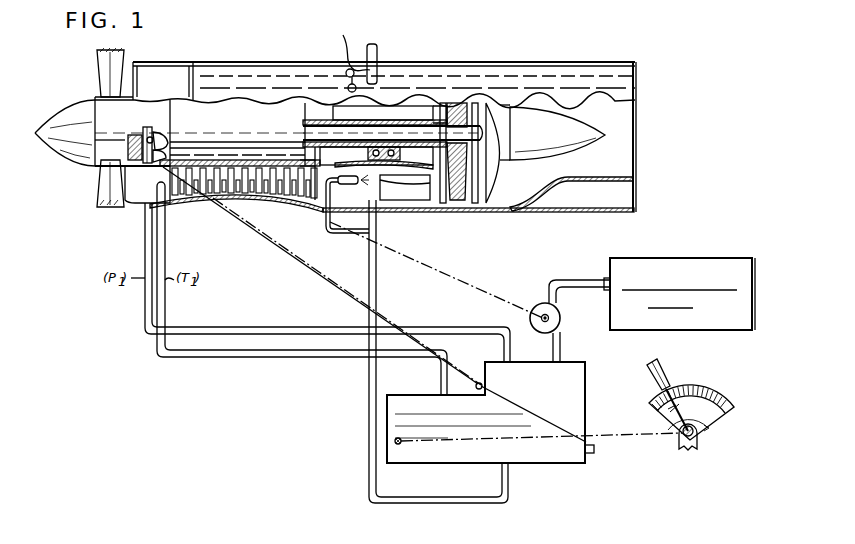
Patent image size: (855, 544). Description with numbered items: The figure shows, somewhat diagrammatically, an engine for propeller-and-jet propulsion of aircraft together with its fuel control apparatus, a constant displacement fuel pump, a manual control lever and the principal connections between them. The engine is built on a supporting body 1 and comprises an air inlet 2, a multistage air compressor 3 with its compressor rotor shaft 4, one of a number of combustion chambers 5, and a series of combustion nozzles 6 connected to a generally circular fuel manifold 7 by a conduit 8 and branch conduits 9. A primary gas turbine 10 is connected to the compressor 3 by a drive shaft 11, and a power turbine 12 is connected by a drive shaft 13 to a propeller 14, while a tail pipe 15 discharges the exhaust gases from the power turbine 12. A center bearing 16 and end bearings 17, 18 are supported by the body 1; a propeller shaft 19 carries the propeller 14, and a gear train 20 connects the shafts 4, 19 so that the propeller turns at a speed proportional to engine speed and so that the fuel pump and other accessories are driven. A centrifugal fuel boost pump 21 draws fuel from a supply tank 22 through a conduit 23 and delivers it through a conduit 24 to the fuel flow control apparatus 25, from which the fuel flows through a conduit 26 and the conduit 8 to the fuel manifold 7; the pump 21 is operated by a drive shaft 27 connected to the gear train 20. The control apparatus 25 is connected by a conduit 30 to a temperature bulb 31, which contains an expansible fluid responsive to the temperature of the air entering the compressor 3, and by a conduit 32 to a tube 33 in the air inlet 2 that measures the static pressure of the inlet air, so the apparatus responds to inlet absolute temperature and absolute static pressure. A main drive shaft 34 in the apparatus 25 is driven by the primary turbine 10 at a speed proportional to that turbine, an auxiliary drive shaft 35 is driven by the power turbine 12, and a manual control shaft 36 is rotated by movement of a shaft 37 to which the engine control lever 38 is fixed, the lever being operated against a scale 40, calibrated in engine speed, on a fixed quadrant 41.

The supporting body 1 is at (544, 60).
The air inlet 2 is at (145, 181).
The multistage air compressor 3 is at (186, 200).
The compressor rotor shaft 4 is at (253, 126).
The combustion chamber 5 is at (410, 198).
The combustion nozzles 6 is at (351, 183).
The fuel manifold 7 is at (377, 52).
The conduit 8 is at (380, 277).
The branch conduits 9 is at (347, 66).
The primary gas turbine 10 is at (447, 208).
The drive shaft 11 is at (318, 116).
The power turbine 12 is at (494, 180).
The drive shaft 13 is at (478, 134).
The propeller 14 is at (108, 72).
The tail pipe 15 is at (625, 157).
The center bearing 16 is at (385, 145).
The end bearing 17 is at (164, 140).
The end bearing 18 is at (518, 153).
The propeller shaft 19 is at (152, 134).
The gear train 20 is at (135, 146).
The centrifugal fuel boost pump 21 is at (562, 321).
The supply tank 22 is at (703, 268).
The conduit 23 is at (576, 282).
The conduit 24 is at (562, 349).
The fuel flow control apparatus 25 is at (558, 392).
The conduit 26 is at (509, 503).
The drive shaft 27 is at (542, 314).
The conduit 30 is at (302, 357).
The temperature bulb 31 is at (152, 208).
The conduit 32 is at (272, 327).
The tube 33 is at (140, 201).
The main drive shaft 34 is at (481, 383).
The auxiliary drive shaft 35 is at (596, 452).
The manual control shaft 36 is at (398, 445).
The shaft 37 is at (700, 443).
The engine control lever 38 is at (671, 374).
The scale 40 is at (722, 398).
The fixed quadrant 41 is at (706, 424).